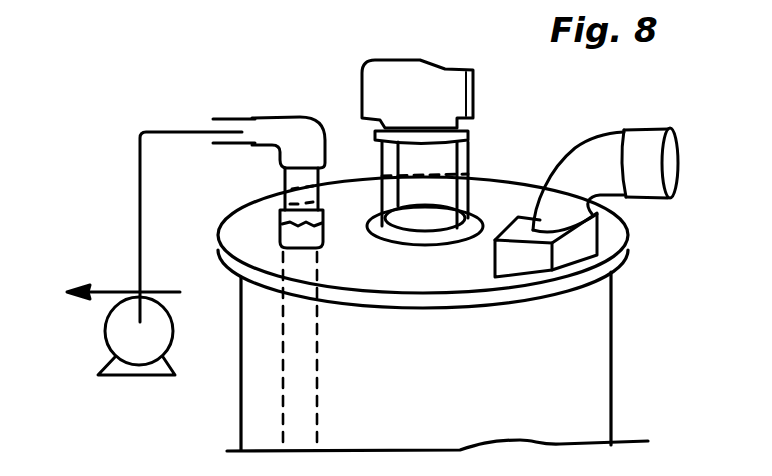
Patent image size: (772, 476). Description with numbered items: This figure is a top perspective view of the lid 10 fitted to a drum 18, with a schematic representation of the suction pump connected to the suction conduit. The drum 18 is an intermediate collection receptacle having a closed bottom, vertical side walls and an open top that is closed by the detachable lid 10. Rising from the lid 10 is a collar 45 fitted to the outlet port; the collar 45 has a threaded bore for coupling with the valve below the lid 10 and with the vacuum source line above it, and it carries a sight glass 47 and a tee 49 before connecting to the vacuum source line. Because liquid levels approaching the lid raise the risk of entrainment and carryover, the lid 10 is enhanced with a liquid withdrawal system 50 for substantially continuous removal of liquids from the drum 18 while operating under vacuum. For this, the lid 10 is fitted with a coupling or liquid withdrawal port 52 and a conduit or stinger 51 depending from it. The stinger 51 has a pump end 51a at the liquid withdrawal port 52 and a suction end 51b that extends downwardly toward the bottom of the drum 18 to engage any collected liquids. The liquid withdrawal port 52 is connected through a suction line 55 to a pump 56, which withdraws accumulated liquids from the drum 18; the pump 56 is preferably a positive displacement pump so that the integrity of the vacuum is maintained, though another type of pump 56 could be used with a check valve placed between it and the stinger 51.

The lid 10 is at (510, 165).
The drum 18 is at (611, 355).
The collar 45 is at (442, 243).
The sight glass 47 is at (480, 152).
The tee 49 is at (440, 62).
The liquid withdrawal system 50 is at (118, 103).
The stinger 51 is at (328, 173).
The pump end 51a is at (283, 176).
The suction end 51b is at (320, 382).
The liquid withdrawal port 52 is at (282, 221).
The suction line 55 is at (138, 172).
The pump 56 is at (105, 330).